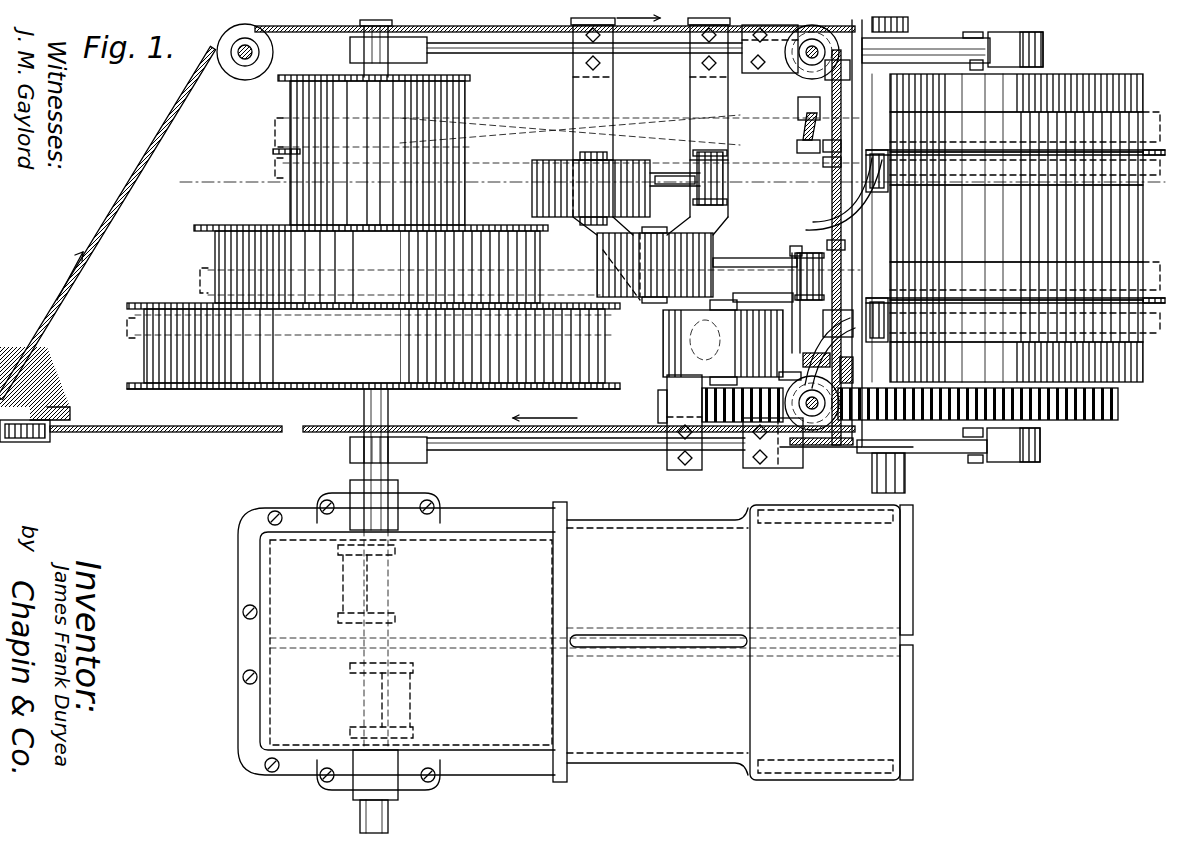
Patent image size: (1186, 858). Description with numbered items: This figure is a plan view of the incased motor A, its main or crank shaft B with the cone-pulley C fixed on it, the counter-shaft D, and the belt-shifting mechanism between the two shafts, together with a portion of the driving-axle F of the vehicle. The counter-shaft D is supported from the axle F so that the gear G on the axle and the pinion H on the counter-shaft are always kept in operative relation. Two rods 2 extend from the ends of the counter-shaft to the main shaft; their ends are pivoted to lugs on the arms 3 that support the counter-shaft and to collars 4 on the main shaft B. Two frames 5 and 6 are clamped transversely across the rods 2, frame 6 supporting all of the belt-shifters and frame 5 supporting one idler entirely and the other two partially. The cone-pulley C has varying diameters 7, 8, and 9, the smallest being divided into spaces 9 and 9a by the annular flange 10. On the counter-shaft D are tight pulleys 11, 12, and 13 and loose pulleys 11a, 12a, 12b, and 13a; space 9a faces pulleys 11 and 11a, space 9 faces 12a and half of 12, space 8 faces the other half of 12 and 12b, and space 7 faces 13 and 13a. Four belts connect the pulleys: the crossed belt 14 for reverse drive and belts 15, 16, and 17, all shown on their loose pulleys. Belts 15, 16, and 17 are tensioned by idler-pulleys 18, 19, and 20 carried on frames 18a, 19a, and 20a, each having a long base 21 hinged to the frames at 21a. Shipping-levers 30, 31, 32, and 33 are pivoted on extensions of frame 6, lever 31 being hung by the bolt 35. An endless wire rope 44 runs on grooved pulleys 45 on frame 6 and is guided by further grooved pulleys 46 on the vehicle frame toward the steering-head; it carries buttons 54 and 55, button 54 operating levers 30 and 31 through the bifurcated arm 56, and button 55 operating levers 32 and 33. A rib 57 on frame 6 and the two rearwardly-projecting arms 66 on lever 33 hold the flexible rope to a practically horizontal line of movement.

The rods 2 is at (552, 55).
The arms 3 is at (916, 41).
The collars 4 is at (352, 48).
The frame 5 is at (687, 244).
The frame 6 is at (767, 68).
The cone-pulley diameter 7 is at (144, 360).
The cone-pulley diameter 8 is at (215, 253).
The cone-pulley diameter 9 is at (290, 205).
The cone-pulley space 9a is at (286, 106).
The annular flange 10 is at (273, 152).
The tight pulley 11 is at (1016, 93).
The loose pulley 11a is at (1025, 132).
The tight pulley 12 is at (1016, 228).
The loose pulley 12a is at (1015, 167).
The loose pulley 12b is at (1025, 281).
The tight pulley 13 is at (1016, 362).
The loose pulley 13a is at (1015, 320).
The crossed belt 14 is at (275, 128).
The belt 15 is at (275, 165).
The belt 16 is at (200, 277).
The belt 17 is at (127, 327).
The idler-pulley 18 is at (591, 188).
The idler-pulley frame 18a is at (665, 175).
The idler-pulley 19 is at (655, 265).
The idler-pulley frame 19a is at (723, 263).
The idler-pulley 20 is at (723, 342).
The idler-pulley frame 20a is at (783, 342).
The base 21 is at (697, 197).
The hinge 21a is at (790, 249).
The shipping-lever 30 is at (830, 90).
The shipping-lever 31 is at (903, 187).
The shipping-lever 32 is at (797, 283).
The shipping-lever 33 is at (900, 322).
The bolt 35 is at (813, 217).
The endless wire rope 44 is at (178, 106).
The grooved pulleys 45 is at (805, 70).
The grooved pulleys 46 is at (235, 70).
The button 54 is at (832, 152).
The button 55 is at (827, 243).
The arm 56 is at (813, 142).
The rib 57 is at (850, 105).
The rearwardly-projecting arms 66 is at (903, 337).
The motor A is at (575, 656).
The main shaft B is at (348, 60).
The cone-pulley C is at (222, 385).
The counter-shaft D is at (1017, 30).
The driving-axle F is at (933, 498).
The gear G is at (658, 405).
The pinion H is at (1067, 415).